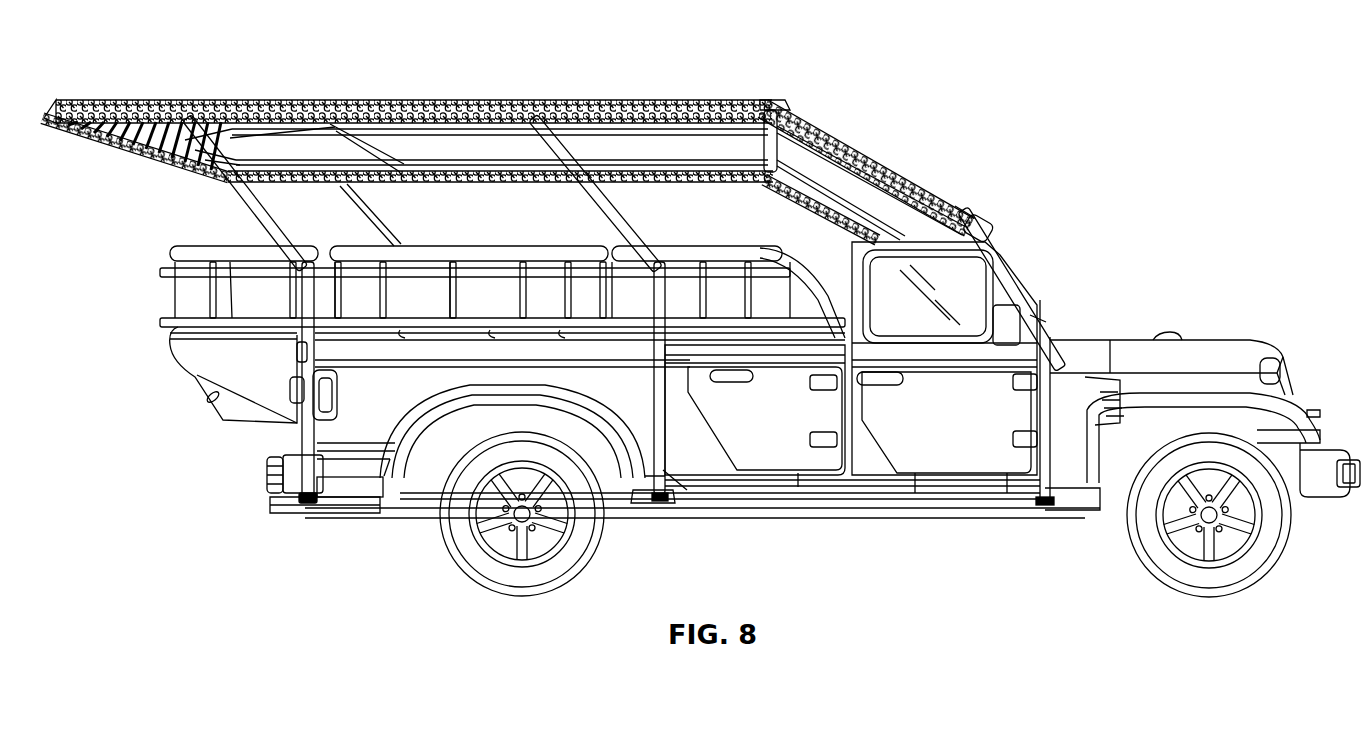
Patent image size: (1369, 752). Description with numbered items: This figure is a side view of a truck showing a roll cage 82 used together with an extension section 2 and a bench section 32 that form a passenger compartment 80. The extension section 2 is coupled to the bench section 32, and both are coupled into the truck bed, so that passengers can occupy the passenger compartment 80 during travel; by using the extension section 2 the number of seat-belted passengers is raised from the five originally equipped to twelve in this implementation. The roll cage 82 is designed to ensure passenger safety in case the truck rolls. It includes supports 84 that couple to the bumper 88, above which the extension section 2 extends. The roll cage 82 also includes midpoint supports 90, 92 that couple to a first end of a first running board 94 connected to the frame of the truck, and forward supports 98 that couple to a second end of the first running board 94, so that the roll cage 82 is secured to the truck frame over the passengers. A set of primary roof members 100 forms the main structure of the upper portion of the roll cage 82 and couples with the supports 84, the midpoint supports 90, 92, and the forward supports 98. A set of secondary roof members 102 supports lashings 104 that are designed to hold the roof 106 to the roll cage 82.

The extension section 2 is at (228, 370).
The bench section 32 is at (255, 300).
The passenger compartment 80 is at (248, 504).
The roll cage 82 is at (652, 48).
The support 84 is at (398, 236).
The bumper 88 is at (275, 474).
The midpoint support 90 is at (670, 447).
The midpoint support 92 is at (618, 218).
The first running board 94 is at (1083, 498).
The forward support 98 is at (1012, 278).
The primary roof member 100 is at (860, 140).
The secondary roof member 102 is at (512, 100).
The lashing 104 is at (605, 100).
The roof 106 is at (758, 108).